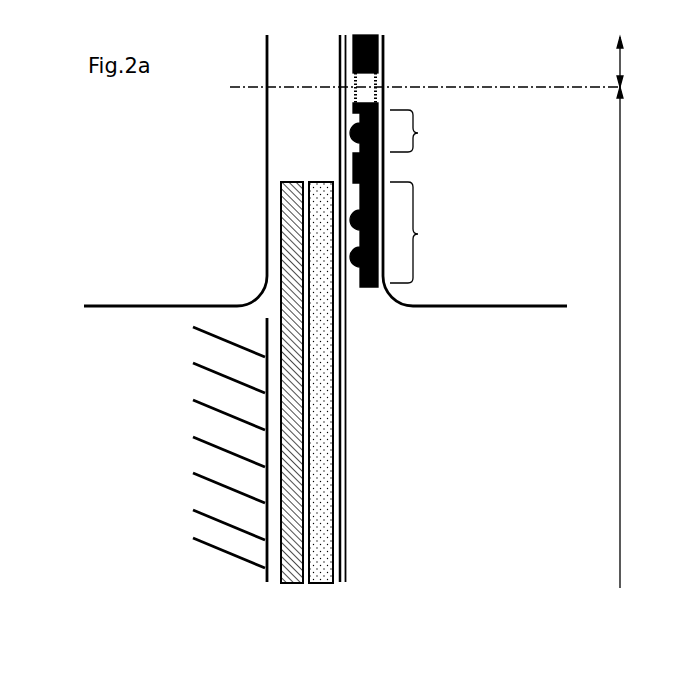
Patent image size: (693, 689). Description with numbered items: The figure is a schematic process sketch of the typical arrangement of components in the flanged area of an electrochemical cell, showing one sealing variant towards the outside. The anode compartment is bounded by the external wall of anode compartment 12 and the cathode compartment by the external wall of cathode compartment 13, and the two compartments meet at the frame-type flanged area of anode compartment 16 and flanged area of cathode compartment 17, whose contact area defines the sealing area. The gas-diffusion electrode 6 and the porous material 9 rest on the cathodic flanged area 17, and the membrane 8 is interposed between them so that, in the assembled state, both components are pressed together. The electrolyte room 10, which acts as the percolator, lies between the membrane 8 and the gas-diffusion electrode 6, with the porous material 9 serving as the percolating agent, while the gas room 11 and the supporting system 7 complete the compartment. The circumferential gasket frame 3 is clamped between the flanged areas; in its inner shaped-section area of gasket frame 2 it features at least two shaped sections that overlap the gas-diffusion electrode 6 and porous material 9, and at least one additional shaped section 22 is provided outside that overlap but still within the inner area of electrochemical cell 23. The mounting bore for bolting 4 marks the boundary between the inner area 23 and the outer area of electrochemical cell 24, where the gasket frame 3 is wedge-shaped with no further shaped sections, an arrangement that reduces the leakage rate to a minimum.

The inner shaped-section area of gasket frame 2 is at (418, 234).
The gasket frame 3 is at (383, 168).
The mounting bore for bolting 4 is at (368, 95).
The gas-diffusion electrode 6 is at (287, 502).
The supporting system 7 is at (265, 398).
The membrane 8 is at (347, 422).
The porous material 9 is at (321, 382).
The electrolyte room 10 is at (317, 558).
The gas room 11 is at (195, 450).
The external wall of anode compartment 12 is at (443, 306).
The external wall of cathode compartment 13 is at (165, 306).
The flanged area of anode compartment 16 is at (383, 50).
The flanged area of cathode compartment 17 is at (266, 212).
The additional shaped section 22 is at (418, 133).
The inner area of electrochemical cell 23 is at (636, 337).
The outer area of electrochemical cell 24 is at (636, 62).